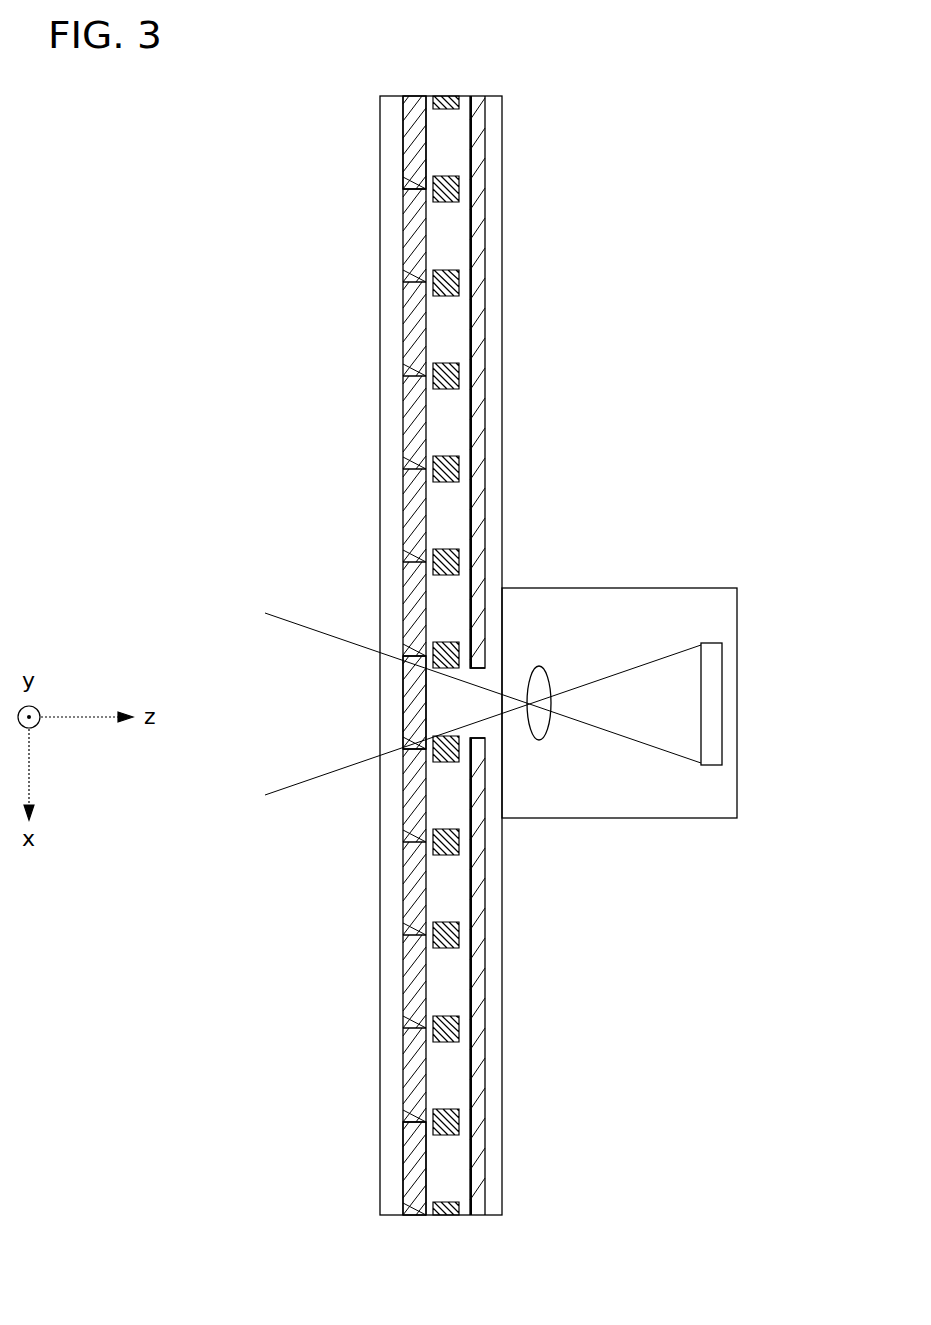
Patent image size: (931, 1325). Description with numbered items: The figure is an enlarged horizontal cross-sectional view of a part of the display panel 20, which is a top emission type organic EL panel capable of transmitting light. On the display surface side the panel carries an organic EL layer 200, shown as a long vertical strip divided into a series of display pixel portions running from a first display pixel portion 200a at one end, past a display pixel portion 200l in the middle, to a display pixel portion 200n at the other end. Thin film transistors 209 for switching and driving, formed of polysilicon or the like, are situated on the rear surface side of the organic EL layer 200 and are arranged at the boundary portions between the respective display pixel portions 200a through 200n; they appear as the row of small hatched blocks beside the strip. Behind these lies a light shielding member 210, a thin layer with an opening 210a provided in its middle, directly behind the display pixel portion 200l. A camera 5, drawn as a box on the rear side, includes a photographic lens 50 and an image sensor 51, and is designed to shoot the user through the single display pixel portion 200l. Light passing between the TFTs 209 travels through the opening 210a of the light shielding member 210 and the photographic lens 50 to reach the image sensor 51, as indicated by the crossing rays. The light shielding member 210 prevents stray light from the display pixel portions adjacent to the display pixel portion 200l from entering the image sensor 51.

The display panel 20 is at (597, 66).
The organic EL layer 200 is at (408, 1218).
The display pixel portion 200n is at (413, 151).
The display pixel portion 200l is at (413, 712).
The display pixel portion 200a is at (413, 1170).
The thin film transistors 209 is at (448, 1218).
The light shielding member 210 is at (478, 1218).
The opening 210a is at (478, 705).
The camera 5 is at (683, 588).
The photographic lens 50 is at (544, 740).
The image sensor 51 is at (724, 700).